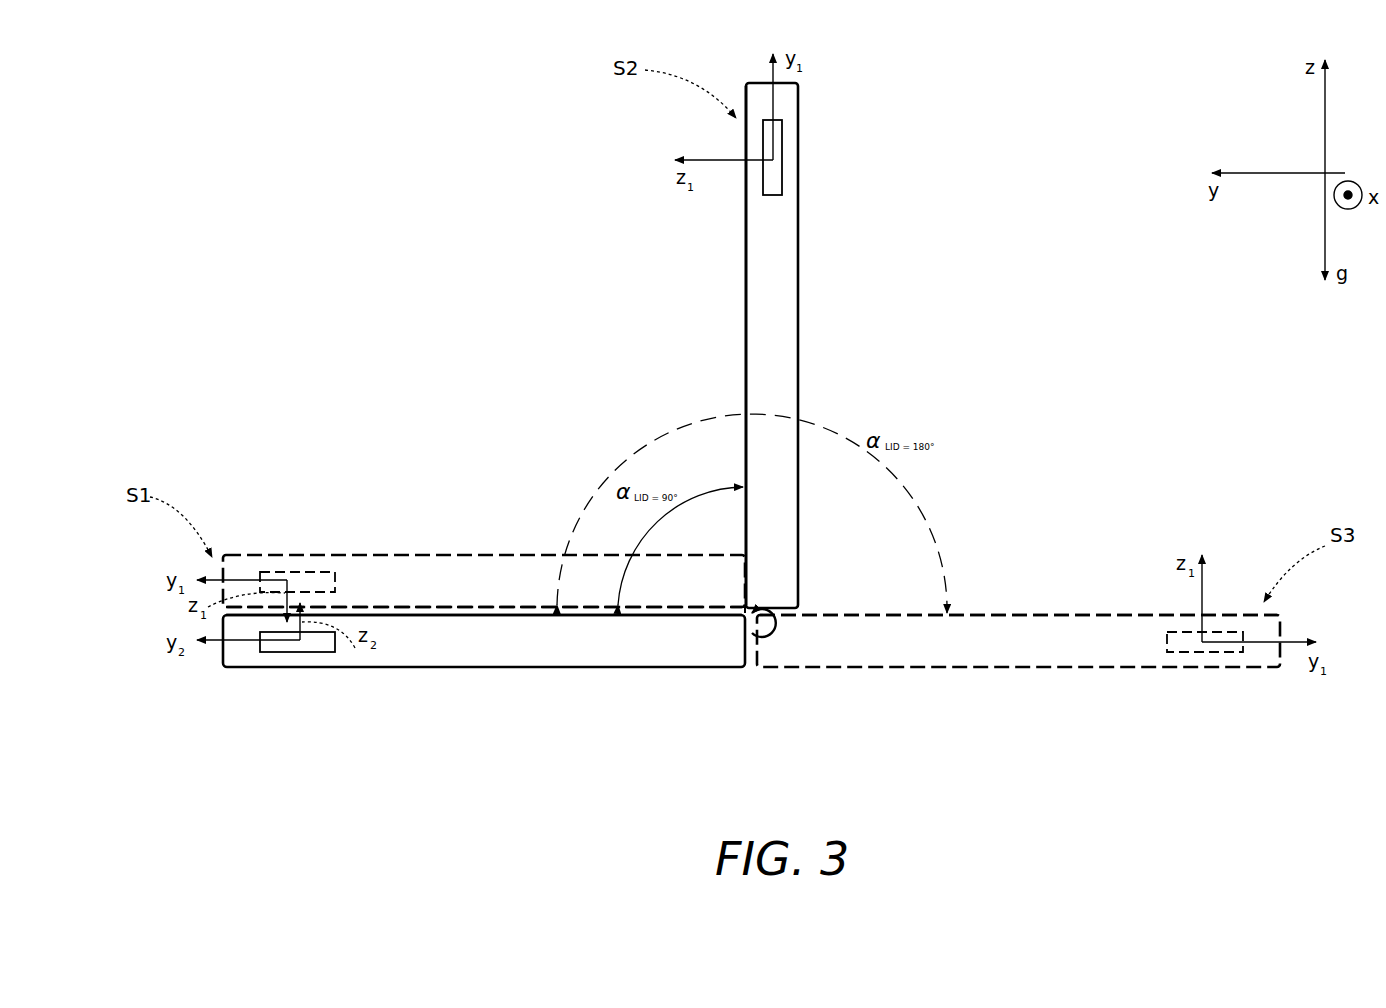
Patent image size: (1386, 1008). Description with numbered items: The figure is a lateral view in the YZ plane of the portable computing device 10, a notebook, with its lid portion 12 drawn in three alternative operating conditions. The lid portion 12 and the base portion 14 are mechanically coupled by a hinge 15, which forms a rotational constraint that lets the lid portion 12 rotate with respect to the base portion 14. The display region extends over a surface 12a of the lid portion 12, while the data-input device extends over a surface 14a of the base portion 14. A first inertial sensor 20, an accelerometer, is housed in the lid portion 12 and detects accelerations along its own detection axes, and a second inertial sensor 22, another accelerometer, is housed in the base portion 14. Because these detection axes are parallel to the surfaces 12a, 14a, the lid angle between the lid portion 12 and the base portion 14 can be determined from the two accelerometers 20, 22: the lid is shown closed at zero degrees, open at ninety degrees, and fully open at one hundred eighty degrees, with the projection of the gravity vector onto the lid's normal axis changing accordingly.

The computing device 10 is at (290, 180).
The lid portion 12 is at (798, 120).
The surface of the lid portion 12a is at (745, 363).
The base portion 14 is at (237, 657).
The surface of the base portion 14a is at (460, 605).
The hinge 15 is at (758, 645).
The first inertial sensor 20 is at (775, 182).
The second inertial sensor 22 is at (310, 645).